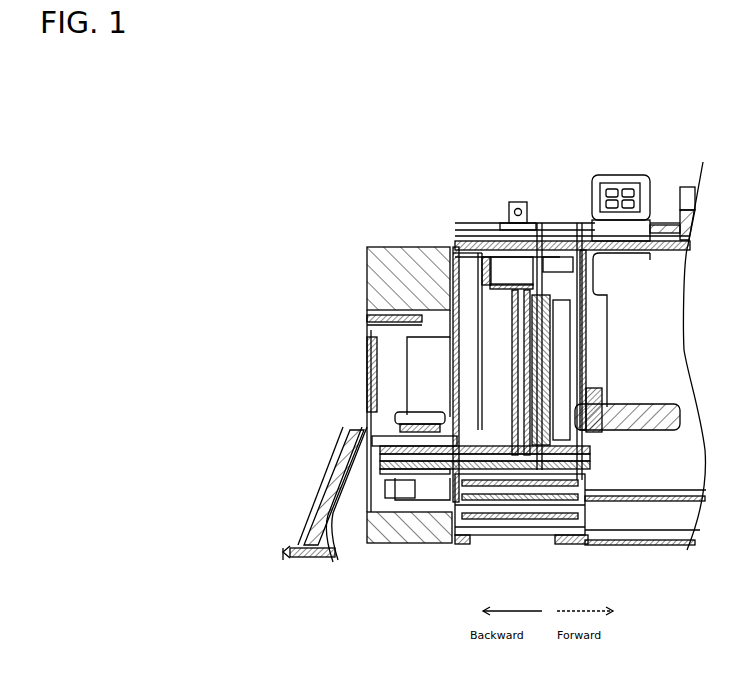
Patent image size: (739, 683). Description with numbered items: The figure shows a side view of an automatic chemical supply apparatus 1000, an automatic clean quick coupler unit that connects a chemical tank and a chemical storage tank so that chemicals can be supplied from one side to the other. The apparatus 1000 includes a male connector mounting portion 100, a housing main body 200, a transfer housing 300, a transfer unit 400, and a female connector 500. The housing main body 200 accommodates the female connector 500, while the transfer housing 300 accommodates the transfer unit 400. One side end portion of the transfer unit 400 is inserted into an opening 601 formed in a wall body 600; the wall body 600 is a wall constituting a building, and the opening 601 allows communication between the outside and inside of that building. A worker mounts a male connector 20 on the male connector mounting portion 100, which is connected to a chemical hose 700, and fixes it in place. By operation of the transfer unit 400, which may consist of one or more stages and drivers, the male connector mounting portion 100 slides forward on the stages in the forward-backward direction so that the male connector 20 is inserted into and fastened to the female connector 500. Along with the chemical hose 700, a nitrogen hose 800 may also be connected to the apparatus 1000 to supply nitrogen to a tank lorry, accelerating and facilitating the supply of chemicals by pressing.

The automatic chemical supply apparatus 1000 is at (373, 150).
The transfer housing 300 is at (500, 227).
The housing main body 200 is at (631, 192).
The opening 601 is at (375, 331).
The male connector 20 is at (420, 412).
The male connector mounting portion 100 is at (372, 437).
The chemical hose 700 is at (322, 497).
The nitrogen hose 800 is at (330, 566).
The wall body 600 is at (425, 536).
The transfer unit 400 is at (432, 480).
The female connector 500 is at (645, 425).